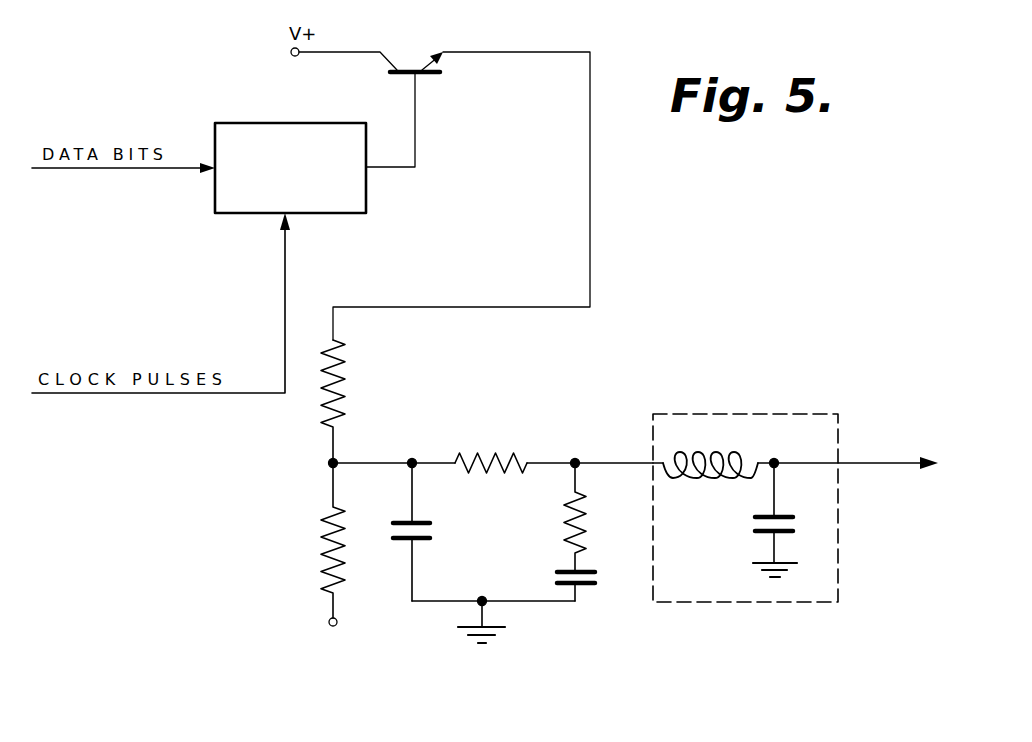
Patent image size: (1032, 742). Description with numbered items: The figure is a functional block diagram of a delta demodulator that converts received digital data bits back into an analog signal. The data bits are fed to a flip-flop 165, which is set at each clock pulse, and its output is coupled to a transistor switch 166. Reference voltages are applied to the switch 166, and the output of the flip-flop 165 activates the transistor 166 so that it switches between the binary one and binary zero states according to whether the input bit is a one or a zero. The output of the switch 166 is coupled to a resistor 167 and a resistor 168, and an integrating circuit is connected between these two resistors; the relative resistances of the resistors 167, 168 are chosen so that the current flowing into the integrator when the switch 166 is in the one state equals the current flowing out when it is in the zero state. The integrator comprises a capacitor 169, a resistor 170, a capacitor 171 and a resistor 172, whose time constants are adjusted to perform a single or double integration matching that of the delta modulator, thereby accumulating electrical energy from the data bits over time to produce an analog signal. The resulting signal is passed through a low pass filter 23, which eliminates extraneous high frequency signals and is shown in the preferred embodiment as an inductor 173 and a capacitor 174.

The flip-flop 165 is at (228, 127).
The transistor switch 166 is at (422, 70).
The resistor 167 is at (352, 372).
The resistor 168 is at (322, 548).
The capacitor 169 is at (432, 534).
The resistor 170 is at (500, 454).
The capacitor 171 is at (598, 580).
The resistor 172 is at (577, 508).
The inductor 173 is at (715, 458).
The capacitor 174 is at (795, 521).
The low pass filter 23 is at (825, 412).